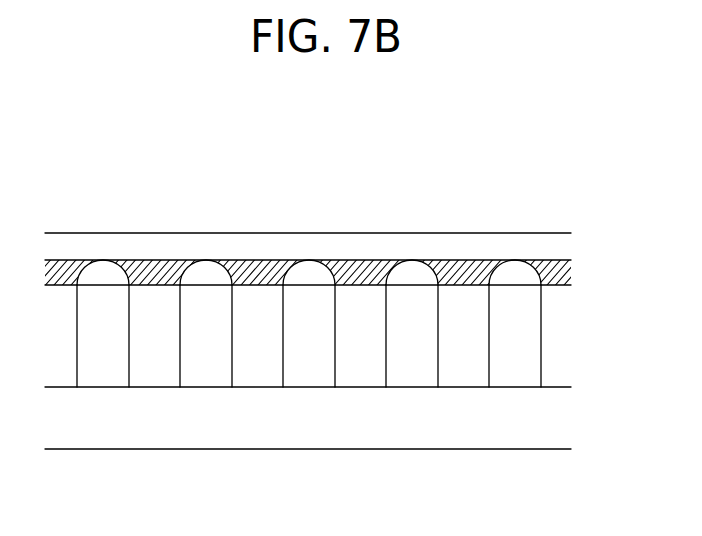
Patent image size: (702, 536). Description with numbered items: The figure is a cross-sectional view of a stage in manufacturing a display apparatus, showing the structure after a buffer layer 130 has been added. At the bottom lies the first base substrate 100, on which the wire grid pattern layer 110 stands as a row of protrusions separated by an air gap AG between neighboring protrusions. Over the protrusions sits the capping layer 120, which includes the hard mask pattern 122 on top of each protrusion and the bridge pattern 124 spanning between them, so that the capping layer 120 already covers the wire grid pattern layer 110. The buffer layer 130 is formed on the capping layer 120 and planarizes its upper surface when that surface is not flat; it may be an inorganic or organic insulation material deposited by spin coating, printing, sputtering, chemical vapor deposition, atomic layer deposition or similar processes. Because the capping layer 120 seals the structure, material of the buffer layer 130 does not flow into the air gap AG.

The first base substrate 100 is at (562, 420).
The wire grid pattern layer 110 is at (526, 338).
The capping layer 120 is at (303, 216).
The hard mask pattern 122 is at (432, 180).
The bridge pattern 124 is at (455, 273).
The buffer layer 130 is at (562, 247).
The air gap AG is at (463, 373).